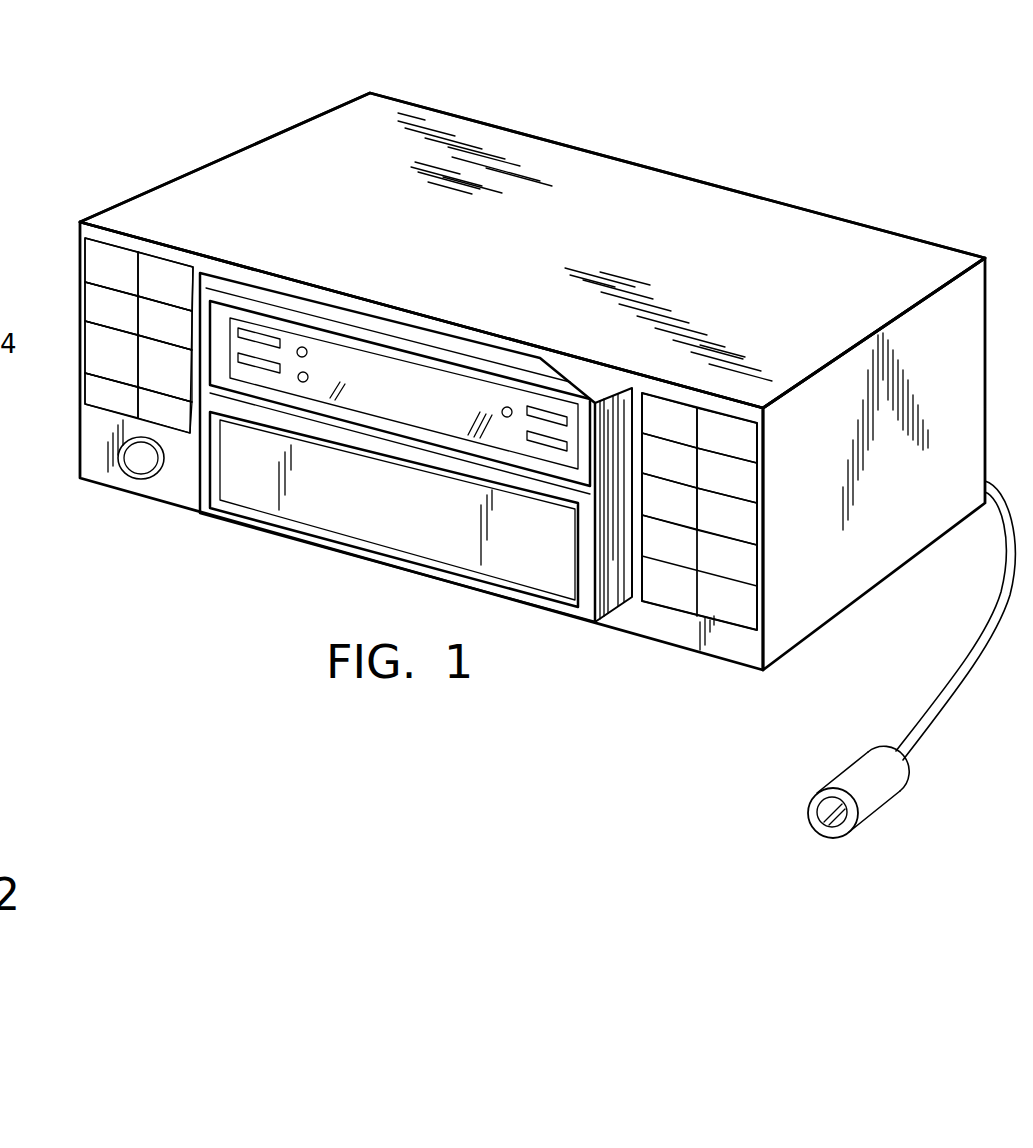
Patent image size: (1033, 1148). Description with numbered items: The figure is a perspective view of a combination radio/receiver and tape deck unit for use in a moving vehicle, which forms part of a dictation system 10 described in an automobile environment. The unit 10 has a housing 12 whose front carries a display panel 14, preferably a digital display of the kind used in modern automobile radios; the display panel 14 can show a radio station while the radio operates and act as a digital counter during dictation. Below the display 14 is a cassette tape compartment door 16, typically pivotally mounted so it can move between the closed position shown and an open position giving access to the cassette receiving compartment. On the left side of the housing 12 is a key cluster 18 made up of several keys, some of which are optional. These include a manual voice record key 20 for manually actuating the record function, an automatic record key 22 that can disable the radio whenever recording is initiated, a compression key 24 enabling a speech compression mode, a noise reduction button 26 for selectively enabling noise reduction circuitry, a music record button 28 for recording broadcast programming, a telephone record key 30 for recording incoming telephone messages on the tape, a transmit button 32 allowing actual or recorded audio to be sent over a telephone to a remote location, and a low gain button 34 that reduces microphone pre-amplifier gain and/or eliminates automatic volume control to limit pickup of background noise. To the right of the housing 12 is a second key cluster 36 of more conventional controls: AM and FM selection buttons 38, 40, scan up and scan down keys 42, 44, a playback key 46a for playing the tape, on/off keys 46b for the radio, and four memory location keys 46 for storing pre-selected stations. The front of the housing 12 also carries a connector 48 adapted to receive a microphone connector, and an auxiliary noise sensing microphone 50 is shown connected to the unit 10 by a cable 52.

The dictation system 10 is at (172, 128).
The housing 12 is at (462, 133).
The display panel 14 is at (462, 388).
The cassette tape compartment door 16 is at (394, 509).
The key cluster 18 is at (136, 376).
The voice record key 20 is at (85, 258).
The automatic record key 22 is at (190, 268).
The compression key 24 is at (85, 306).
The noise reduction button 26 is at (184, 321).
The music record button 28 is at (86, 345).
The telephone record key 30 is at (330, 572).
The transmit button 32 is at (88, 398).
The low gain button 34 is at (190, 435).
The second key cluster 36 is at (669, 520).
The AM button 38 is at (650, 403).
The FM button 40 is at (708, 412).
The scan up key 42 is at (642, 456).
The scan down key 44 is at (748, 464).
The memory location keys 46 is at (660, 625).
The playback key 46a is at (643, 514).
The on/off keys 46b is at (748, 518).
The connector 48 is at (141, 479).
The auxiliary noise sensing microphone 50 is at (866, 820).
The cable 52 is at (975, 668).